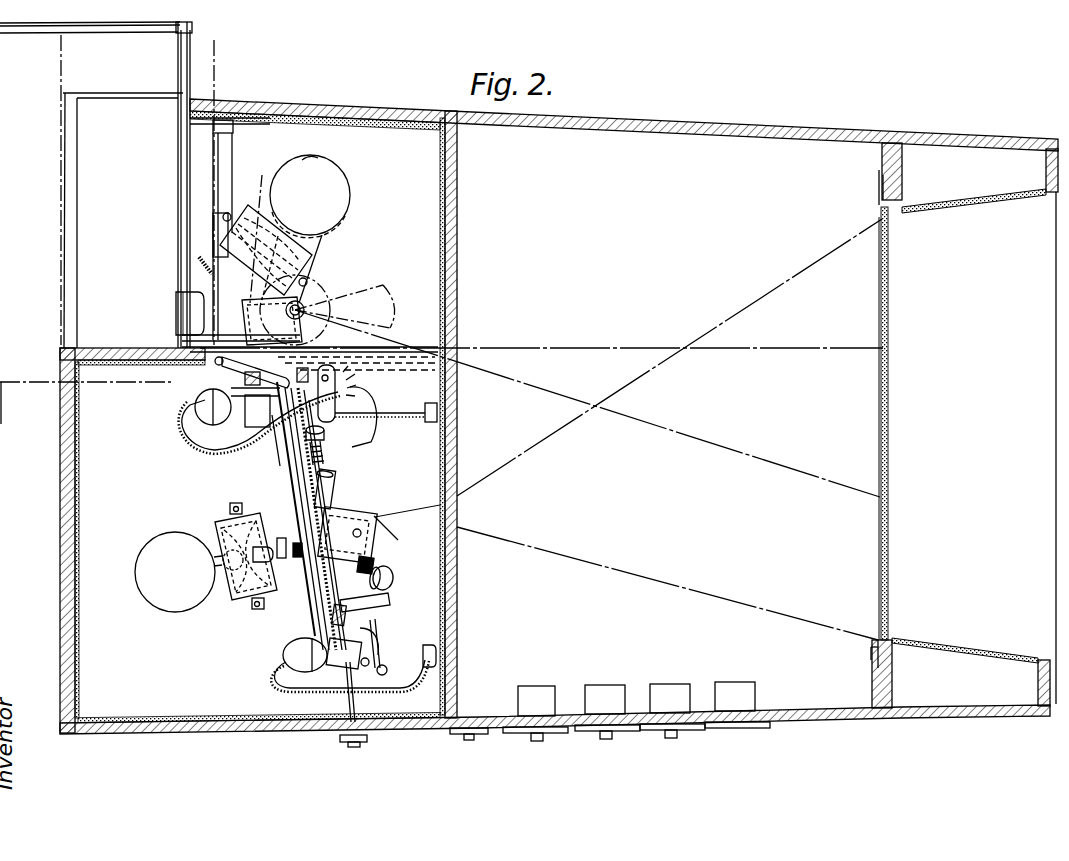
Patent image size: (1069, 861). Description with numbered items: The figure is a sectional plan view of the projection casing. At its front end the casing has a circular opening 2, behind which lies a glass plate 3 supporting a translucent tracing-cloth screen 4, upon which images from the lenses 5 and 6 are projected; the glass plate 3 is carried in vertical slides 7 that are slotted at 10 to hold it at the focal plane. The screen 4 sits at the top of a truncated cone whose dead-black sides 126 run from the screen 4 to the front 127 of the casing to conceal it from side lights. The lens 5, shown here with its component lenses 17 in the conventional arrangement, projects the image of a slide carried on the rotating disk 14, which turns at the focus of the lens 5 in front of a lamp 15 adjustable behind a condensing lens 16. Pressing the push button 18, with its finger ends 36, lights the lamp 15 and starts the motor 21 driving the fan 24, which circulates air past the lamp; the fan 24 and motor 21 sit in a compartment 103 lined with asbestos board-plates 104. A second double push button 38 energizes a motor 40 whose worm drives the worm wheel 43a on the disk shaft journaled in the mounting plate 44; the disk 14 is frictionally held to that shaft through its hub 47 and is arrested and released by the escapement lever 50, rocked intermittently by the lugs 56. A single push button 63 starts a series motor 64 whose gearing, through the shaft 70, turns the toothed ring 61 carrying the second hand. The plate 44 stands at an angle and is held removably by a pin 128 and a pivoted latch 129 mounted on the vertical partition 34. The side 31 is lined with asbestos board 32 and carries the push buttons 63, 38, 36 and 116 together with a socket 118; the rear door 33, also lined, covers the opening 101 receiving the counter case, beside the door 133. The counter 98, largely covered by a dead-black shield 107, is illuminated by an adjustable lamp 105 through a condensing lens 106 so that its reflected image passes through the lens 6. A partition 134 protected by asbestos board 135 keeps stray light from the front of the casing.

The circular opening 2 is at (1068, 398).
The glass plate 3 is at (889, 402).
The tracing cloth screen 4 is at (879, 367).
The lens 5 is at (352, 522).
The lens 6 is at (268, 304).
The slides 7 is at (881, 168).
The slots 10 is at (899, 177).
The disk 14 is at (276, 455).
The lamp 15 is at (152, 520).
The condensing lens 16 is at (233, 520).
The component lenses 17 is at (376, 518).
The push button 18 is at (617, 740).
The motor 21 is at (316, 291).
The fan 24 is at (388, 305).
The side of the casing 31 is at (206, 735).
The asbestos board 32 is at (194, 720).
The rear door 33 is at (60, 510).
The vertical partition 34 is at (141, 366).
The finger ends of push button 36 is at (605, 740).
The double push button 38 is at (538, 742).
The motor 40 is at (330, 441).
The worm wheel 43a is at (381, 565).
The mounting plate 44 is at (357, 706).
The hub of the disk 47 is at (280, 535).
The escapement lever 50 is at (252, 419).
The lugs 56 is at (287, 478).
The ring 61 is at (314, 592).
The push button 63 is at (470, 741).
The series motor 64 is at (366, 399).
The shaft 70 is at (333, 491).
The counter 98 is at (175, 318).
The opening 101 is at (122, 191).
The compartment 103 is at (328, 229).
The asbestos board-plates 104 is at (363, 124).
The adjustable lamp 105 is at (326, 151).
The condensing lens 106 is at (262, 236).
The shield 107 is at (205, 262).
The push button 116 is at (670, 740).
The socket 118 is at (746, 731).
The sides of truncated cone 126 is at (968, 651).
The front of the casing 127 is at (1057, 190).
The pin 128 is at (353, 743).
The pivoted latch 129 is at (213, 364).
The rear door 133 is at (128, 32).
The partition 134 is at (457, 438).
The asbestos board 135 is at (430, 641).